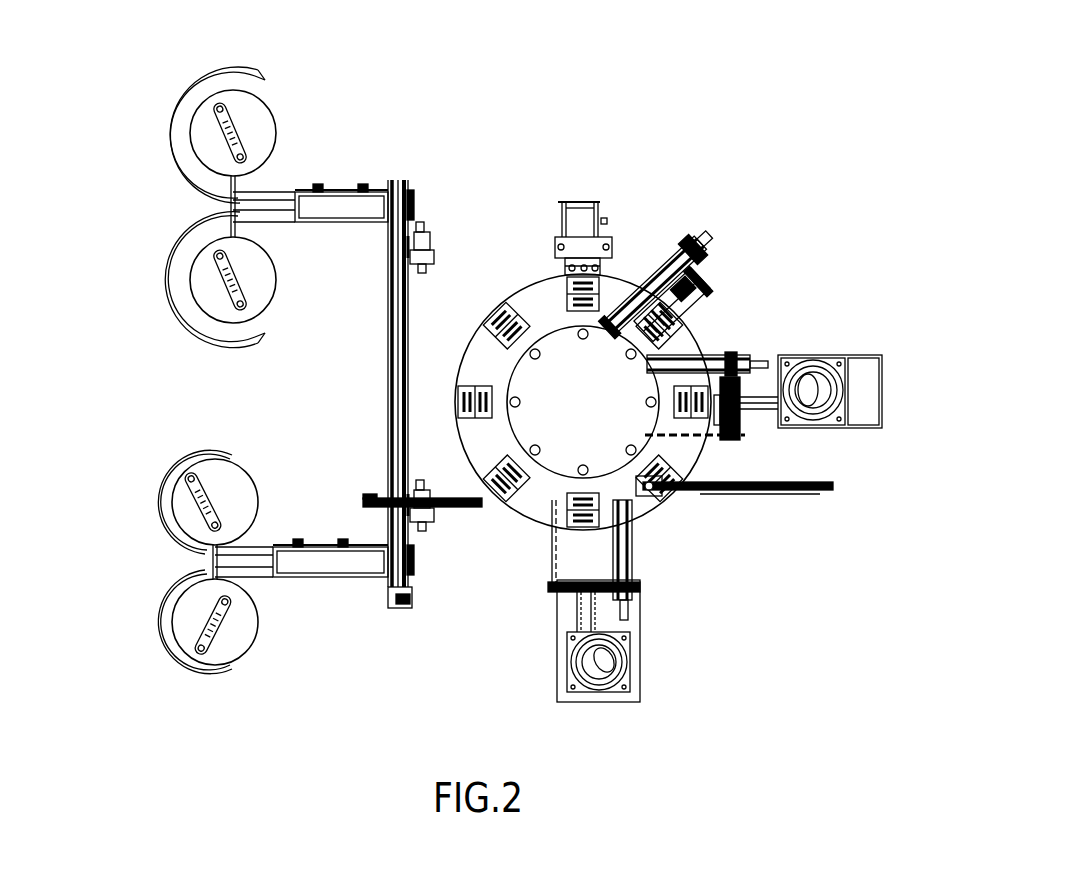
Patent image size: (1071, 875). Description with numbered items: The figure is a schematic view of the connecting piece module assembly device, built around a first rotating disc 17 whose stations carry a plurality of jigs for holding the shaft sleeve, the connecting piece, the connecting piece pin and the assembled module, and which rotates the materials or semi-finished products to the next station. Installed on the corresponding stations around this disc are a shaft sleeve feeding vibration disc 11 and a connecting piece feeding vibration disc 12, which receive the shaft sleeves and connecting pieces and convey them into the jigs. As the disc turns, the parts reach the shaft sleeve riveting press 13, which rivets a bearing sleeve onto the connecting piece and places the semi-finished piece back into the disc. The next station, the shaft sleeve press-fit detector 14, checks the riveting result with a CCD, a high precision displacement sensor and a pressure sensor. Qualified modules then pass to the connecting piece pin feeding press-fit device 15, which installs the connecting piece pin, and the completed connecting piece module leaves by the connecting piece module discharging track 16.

The shaft sleeve feeding vibration disc 11 is at (628, 643).
The connecting piece feeding vibration disc 12 is at (157, 242).
The shaft sleeve riveting press 13 is at (598, 202).
The shaft sleeve press-fit detector 14 is at (702, 293).
The connecting piece pin feeding press-fit device 15 is at (880, 355).
The connecting piece module discharging track 16 is at (835, 490).
The first rotating disc 17 is at (516, 292).